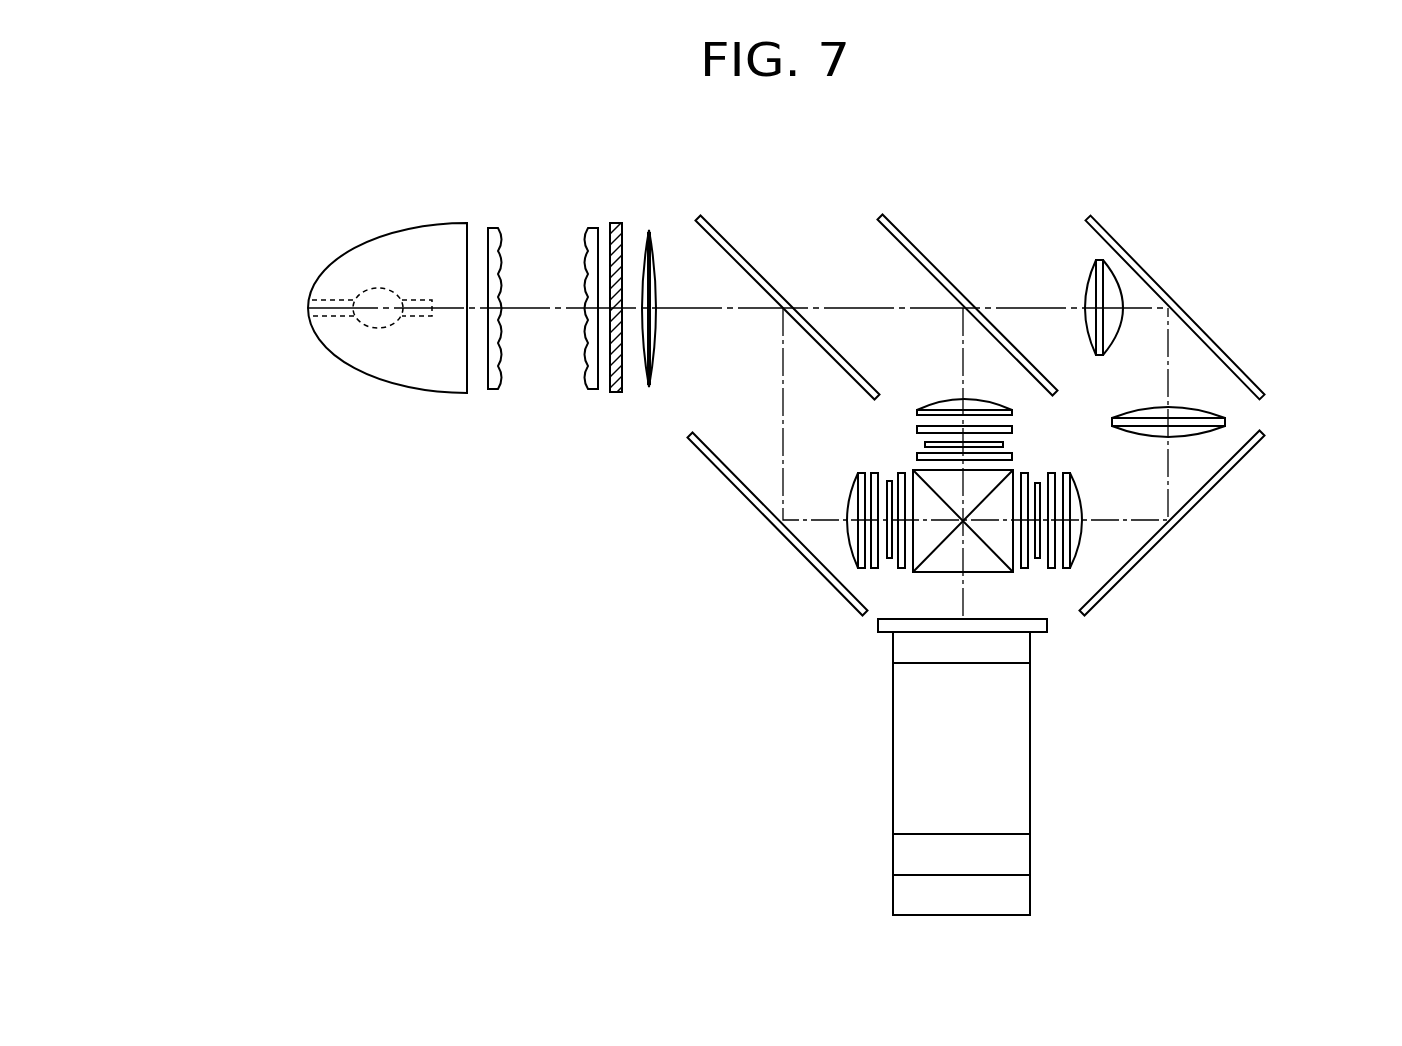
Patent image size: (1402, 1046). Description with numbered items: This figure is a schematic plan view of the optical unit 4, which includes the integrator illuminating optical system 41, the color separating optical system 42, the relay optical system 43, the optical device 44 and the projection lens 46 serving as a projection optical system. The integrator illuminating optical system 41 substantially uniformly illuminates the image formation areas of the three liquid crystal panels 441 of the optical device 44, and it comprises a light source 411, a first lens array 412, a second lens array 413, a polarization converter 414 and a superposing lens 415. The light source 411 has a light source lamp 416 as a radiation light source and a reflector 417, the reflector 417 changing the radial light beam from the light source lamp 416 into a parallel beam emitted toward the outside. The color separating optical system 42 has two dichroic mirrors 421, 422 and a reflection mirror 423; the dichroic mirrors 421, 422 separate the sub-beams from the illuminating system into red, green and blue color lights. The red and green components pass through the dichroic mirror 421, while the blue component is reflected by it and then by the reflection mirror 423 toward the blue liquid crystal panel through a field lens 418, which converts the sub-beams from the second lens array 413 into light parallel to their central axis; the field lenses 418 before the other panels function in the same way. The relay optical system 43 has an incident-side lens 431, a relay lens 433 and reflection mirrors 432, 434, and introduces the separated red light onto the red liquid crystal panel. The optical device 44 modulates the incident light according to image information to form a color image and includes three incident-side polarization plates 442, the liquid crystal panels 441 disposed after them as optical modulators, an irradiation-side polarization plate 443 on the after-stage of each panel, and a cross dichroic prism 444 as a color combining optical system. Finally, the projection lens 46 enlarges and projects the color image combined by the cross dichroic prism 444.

The optical unit 4 is at (488, 589).
The integrator illuminating optical system 41 is at (410, 179).
The light source 411 is at (247, 183).
The first lens array 412 is at (495, 228).
The second lens array 413 is at (597, 226).
The polarization converter 414 is at (615, 223).
The superposing lens 415 is at (650, 230).
The light source lamp 416 is at (337, 298).
The reflector 417 is at (353, 252).
The field lens 418 is at (975, 405).
The color separating optical system 42 is at (842, 181).
The dichroic mirror 421 is at (733, 243).
The dichroic mirror 422 is at (900, 230).
The reflection mirror 423 is at (722, 473).
The relay optical system 43 is at (1239, 233).
The incident-side lens 431 is at (1088, 280).
The reflection mirror 432 is at (1227, 350).
The relay lens 433 is at (1227, 420).
The reflection mirror 434 is at (1220, 485).
The optical device 44 is at (1165, 704).
The liquid crystal panel 441 is at (1090, 638).
The incident-side polarization plate 442 is at (917, 430).
The irradiation-side polarization plate 443 is at (917, 457).
The cross dichroic prism 444 is at (977, 565).
The projection lens 46 is at (1017, 788).